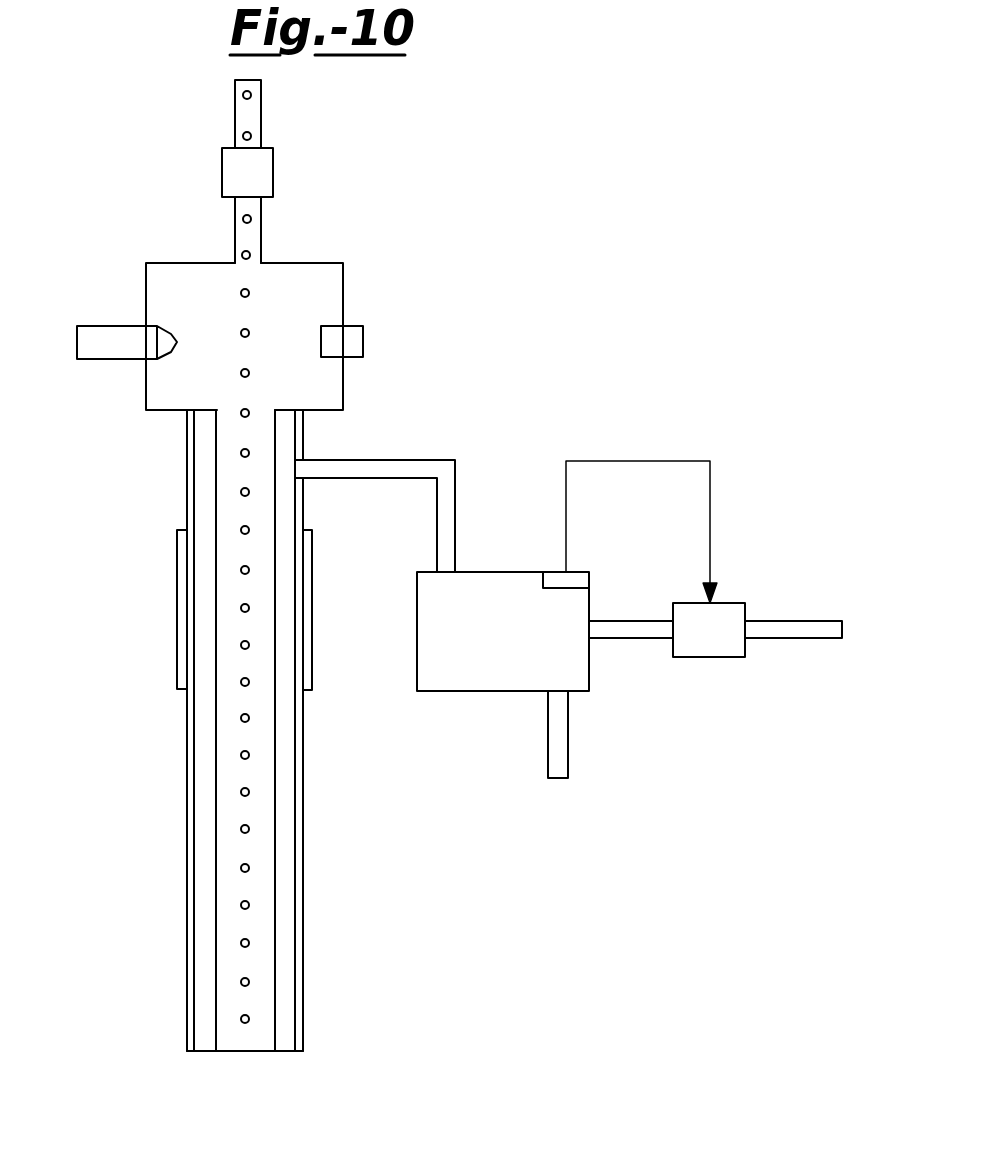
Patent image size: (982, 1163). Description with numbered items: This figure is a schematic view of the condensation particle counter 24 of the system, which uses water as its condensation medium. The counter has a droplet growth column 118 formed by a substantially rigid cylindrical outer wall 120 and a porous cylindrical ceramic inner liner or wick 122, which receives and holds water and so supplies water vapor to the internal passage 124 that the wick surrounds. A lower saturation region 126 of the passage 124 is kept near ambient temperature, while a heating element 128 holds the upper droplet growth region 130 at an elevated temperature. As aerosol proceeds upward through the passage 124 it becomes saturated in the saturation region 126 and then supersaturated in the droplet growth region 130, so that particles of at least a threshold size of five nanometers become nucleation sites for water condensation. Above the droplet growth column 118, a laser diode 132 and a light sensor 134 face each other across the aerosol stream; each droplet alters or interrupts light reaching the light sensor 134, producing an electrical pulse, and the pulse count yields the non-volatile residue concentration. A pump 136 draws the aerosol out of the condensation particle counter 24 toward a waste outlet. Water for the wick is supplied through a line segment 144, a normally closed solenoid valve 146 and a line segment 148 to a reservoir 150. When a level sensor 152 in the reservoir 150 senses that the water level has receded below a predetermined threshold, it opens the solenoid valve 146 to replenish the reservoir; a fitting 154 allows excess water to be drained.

The condensation particle counter 24 is at (427, 385).
The droplet growth column 118 is at (187, 727).
The cylindrical outer wall 120 is at (187, 853).
The wick 122 is at (202, 952).
The internal passage 124 is at (237, 1053).
The saturation region 126 is at (260, 930).
The heating element 128 is at (177, 541).
The droplet growth region 130 is at (233, 585).
The laser diode 132 is at (110, 326).
The light sensor 134 is at (355, 326).
The pump 136 is at (273, 173).
The line segment 144 is at (775, 621).
The solenoid valve 146 is at (712, 657).
The line segment 148 is at (618, 640).
The reservoir 150 is at (525, 641).
The level sensor 152 is at (558, 572).
The drain fitting 154 is at (545, 735).